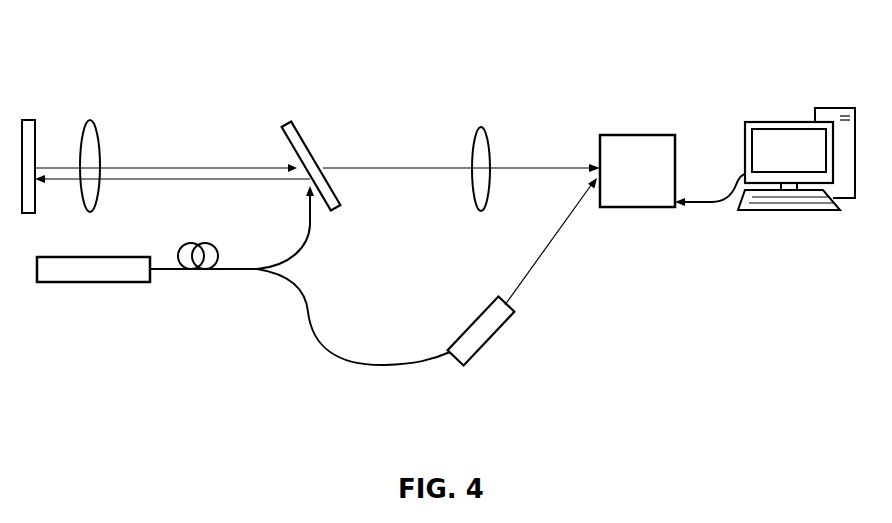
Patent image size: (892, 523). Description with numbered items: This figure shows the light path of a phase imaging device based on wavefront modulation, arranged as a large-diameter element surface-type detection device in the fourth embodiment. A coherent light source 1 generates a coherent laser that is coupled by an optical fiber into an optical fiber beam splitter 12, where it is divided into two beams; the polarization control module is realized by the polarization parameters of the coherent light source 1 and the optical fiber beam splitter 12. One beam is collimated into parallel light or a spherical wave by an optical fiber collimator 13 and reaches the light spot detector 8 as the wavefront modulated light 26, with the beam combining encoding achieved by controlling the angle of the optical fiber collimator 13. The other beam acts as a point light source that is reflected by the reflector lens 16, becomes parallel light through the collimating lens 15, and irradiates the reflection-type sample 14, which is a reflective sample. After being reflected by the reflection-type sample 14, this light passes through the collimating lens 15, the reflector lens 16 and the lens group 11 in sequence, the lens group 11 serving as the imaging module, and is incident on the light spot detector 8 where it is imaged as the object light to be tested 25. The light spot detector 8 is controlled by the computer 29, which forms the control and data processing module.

The coherent light source 1 is at (52, 267).
The optical fiber beam splitter 12 is at (199, 270).
The optical fiber collimator 13 is at (492, 315).
The wavefront modulated light 26 is at (564, 227).
The reflection-type sample 14 is at (32, 119).
The collimating lens 15 is at (93, 120).
The reflector lens 16 is at (305, 137).
The object light to be tested 25 is at (551, 168).
The lens group 11 is at (481, 130).
The light spot detector 8 is at (667, 150).
The computer 29 is at (778, 120).